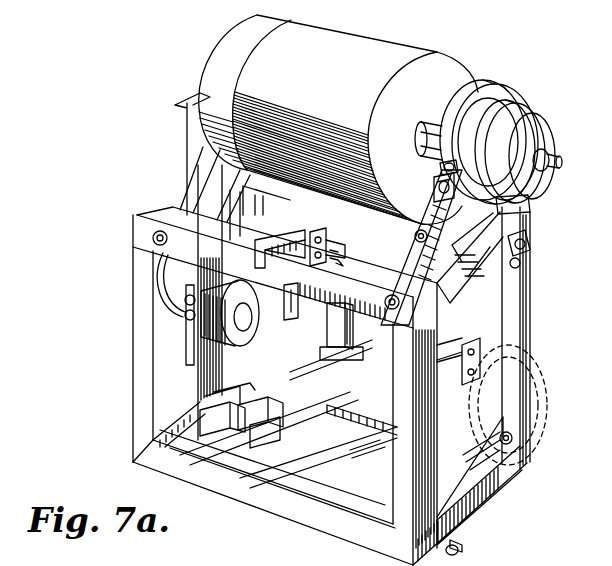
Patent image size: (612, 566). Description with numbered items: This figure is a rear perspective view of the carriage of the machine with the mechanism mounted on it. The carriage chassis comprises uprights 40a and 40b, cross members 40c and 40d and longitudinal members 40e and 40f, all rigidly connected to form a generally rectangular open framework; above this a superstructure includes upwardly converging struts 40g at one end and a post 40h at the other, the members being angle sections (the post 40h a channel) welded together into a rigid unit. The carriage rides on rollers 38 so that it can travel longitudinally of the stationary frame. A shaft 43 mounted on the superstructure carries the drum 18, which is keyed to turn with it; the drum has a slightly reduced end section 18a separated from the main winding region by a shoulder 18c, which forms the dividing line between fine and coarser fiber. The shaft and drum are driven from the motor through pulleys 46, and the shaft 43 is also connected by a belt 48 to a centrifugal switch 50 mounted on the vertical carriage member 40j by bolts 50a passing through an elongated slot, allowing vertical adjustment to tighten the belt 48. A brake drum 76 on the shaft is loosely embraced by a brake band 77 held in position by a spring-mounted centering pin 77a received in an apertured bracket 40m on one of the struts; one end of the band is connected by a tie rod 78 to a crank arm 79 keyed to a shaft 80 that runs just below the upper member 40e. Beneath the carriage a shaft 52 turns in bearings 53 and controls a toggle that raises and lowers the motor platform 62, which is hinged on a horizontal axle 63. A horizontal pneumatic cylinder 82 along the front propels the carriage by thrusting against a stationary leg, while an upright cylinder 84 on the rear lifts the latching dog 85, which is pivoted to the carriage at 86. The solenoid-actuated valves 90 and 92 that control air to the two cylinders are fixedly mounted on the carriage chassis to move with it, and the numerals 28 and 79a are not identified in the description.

The drum 18 is at (378, 50).
The reduced end section of drum 18a is at (224, 54).
The shoulder 18c is at (243, 70).
The brake band 77 is at (487, 87).
The spring-mounted centering pin 77a is at (438, 163).
The brake drum 76 is at (508, 103).
The pulleys 46 is at (538, 128).
The shaft 43 is at (552, 158).
The apertured bracket 40m is at (433, 207).
The cross member 40d is at (168, 204).
The upright 40b is at (150, 377).
The longitudinal member 40f is at (373, 276).
The cross member 40c is at (468, 278).
The upright 40a is at (522, 313).
The struts 40g is at (396, 280).
The post 40h is at (188, 134).
The longitudinal member 40e is at (352, 416).
The vertical carriage member 40j is at (186, 393).
The belt 48 is at (197, 177).
The shaft 80 is at (266, 200).
The latching dog 85 is at (303, 232).
The pivot 86 is at (325, 233).
The rollers 38 is at (152, 238).
The bolt 28 is at (396, 311).
The centrifugal switch 50 is at (260, 320).
The bolts 50a is at (185, 313).
The pneumatic cylinder 84 is at (348, 385).
The valve 92 is at (296, 380).
The pneumatic cylinder 82 is at (466, 360).
The horizontal axle 63 is at (513, 440).
The bearings 53 is at (470, 538).
The tie rod 78 is at (518, 212).
The bearing 79a is at (530, 240).
The crank arm 79 is at (523, 267).
The valve 90 is at (213, 422).
The shaft 52 is at (300, 478).
The platform 62 is at (378, 445).